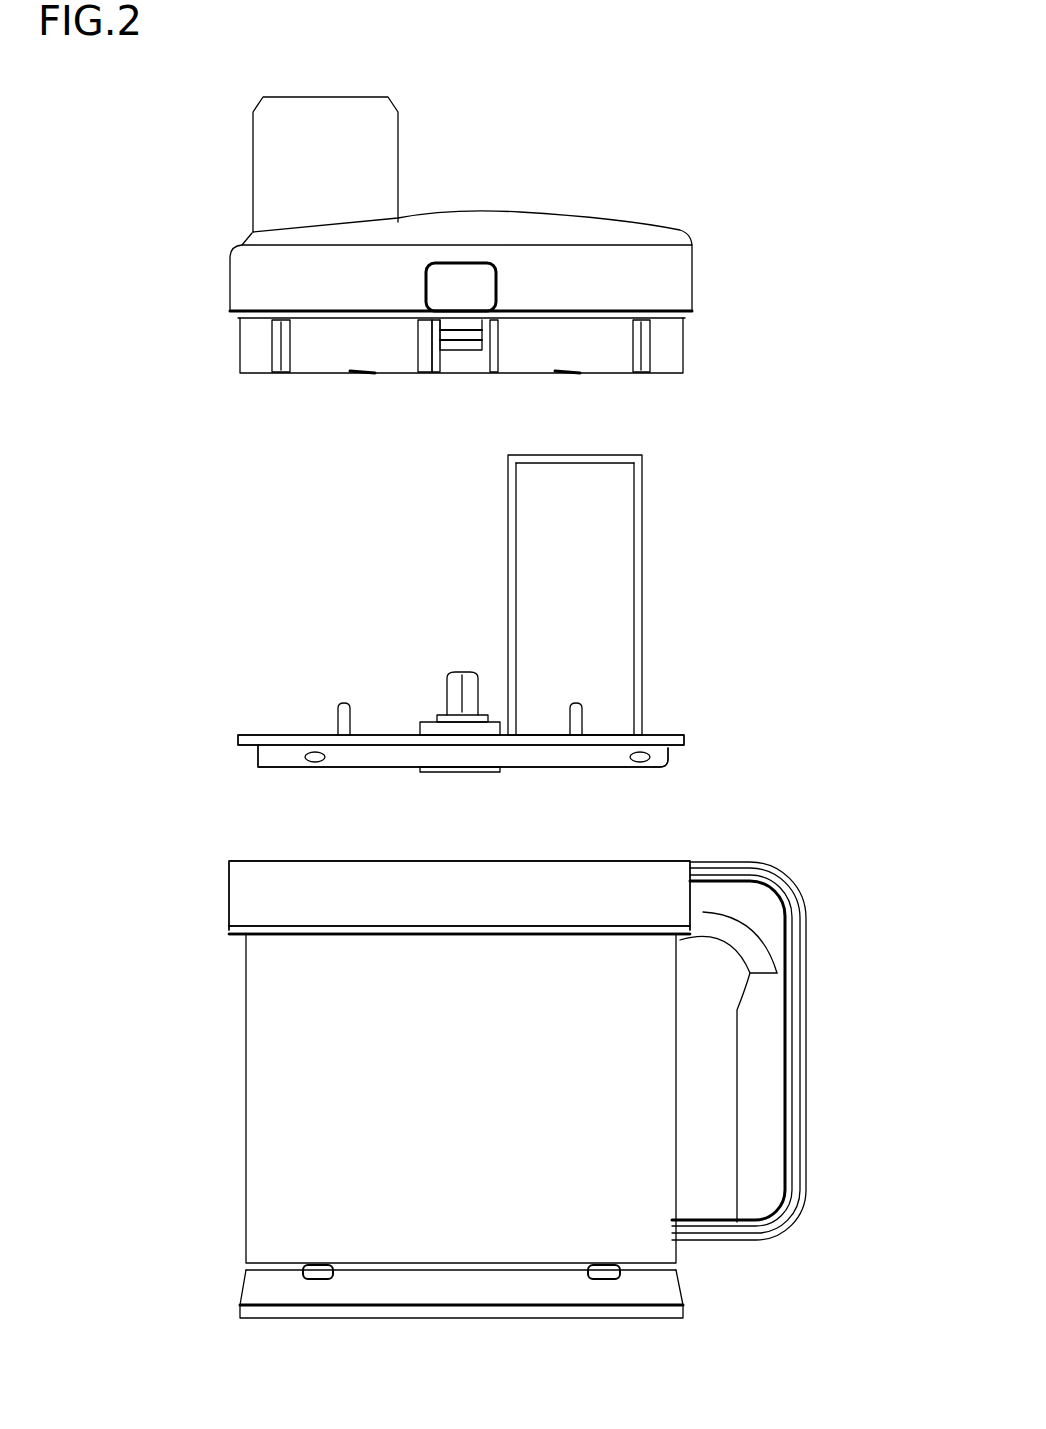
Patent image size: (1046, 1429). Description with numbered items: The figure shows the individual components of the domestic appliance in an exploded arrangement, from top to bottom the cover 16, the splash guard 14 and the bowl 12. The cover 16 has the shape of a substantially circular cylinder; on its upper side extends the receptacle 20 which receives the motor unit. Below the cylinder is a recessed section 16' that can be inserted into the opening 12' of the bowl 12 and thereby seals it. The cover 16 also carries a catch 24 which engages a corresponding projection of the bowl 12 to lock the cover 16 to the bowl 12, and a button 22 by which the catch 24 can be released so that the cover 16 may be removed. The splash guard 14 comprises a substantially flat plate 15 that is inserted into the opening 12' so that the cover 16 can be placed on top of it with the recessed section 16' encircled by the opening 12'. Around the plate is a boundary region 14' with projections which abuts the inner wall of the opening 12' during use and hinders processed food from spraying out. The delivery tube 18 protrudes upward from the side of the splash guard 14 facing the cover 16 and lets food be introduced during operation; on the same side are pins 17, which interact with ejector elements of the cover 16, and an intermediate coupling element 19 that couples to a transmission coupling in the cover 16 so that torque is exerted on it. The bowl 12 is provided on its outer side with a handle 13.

The bowl 12 is at (544, 1061).
The opening of the bowl 12' is at (459, 869).
The handle 13 is at (808, 975).
The splash guard 14 is at (503, 714).
The boundary region 14' is at (521, 763).
The flat plate 15 is at (302, 742).
The cover 16 is at (528, 264).
The recessed section 16' is at (521, 348).
The pins 17 is at (352, 718).
The delivery tube 18 is at (637, 550).
The intermediate coupling element 19 is at (455, 672).
The receptacle 20 is at (403, 129).
The button 22 is at (465, 295).
The catch 24 is at (455, 347).